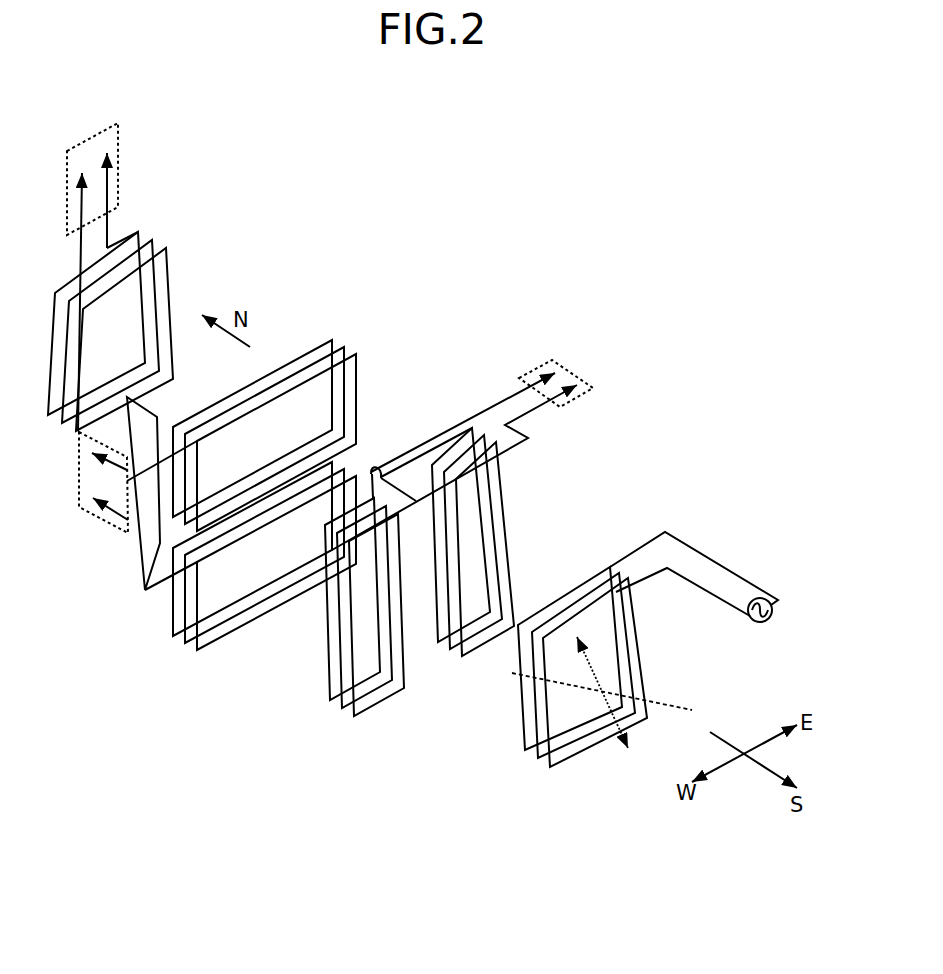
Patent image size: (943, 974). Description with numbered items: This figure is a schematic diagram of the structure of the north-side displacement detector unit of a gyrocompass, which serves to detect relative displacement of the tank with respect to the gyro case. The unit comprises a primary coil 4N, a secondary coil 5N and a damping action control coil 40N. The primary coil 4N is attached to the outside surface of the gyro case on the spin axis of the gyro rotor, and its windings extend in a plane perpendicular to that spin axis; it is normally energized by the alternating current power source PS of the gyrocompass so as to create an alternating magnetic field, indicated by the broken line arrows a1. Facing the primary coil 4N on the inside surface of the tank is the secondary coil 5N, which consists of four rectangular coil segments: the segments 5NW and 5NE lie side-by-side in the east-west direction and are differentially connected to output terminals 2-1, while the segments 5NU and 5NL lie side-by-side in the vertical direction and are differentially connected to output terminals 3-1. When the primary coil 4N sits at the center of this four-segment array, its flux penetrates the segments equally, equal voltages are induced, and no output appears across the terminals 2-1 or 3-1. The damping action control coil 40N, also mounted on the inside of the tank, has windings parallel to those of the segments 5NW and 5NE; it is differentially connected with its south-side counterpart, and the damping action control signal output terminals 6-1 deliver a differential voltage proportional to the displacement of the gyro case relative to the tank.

The damping action control signal output terminals 6-1 is at (120, 148).
The damping action control coil 40N is at (180, 282).
The output terminals 3-1 is at (100, 518).
The secondary coil 5N is at (202, 740).
The rectangular coil segment 5NU is at (374, 368).
The rectangular coil segment 5NL is at (172, 643).
The rectangular coil segment 5NW is at (320, 648).
The rectangular coil segment 5NE is at (518, 554).
The output terminals 2-1 is at (580, 396).
The primary coil 4N is at (532, 765).
The alternating current power source PS is at (770, 620).
The broken line arrows a1 is at (650, 683).